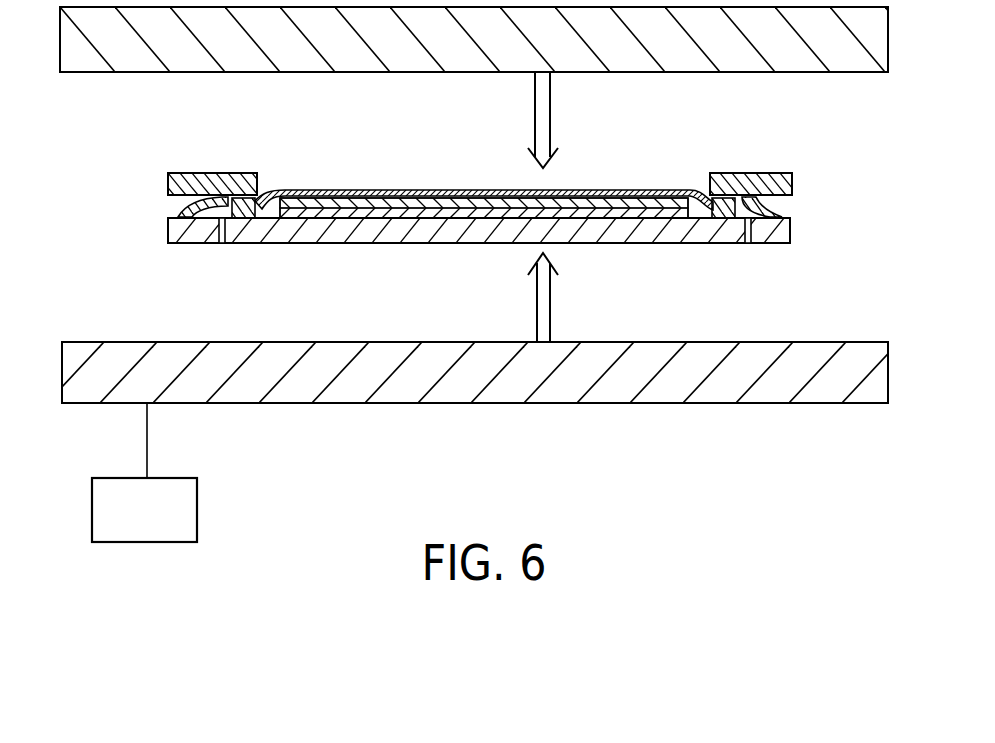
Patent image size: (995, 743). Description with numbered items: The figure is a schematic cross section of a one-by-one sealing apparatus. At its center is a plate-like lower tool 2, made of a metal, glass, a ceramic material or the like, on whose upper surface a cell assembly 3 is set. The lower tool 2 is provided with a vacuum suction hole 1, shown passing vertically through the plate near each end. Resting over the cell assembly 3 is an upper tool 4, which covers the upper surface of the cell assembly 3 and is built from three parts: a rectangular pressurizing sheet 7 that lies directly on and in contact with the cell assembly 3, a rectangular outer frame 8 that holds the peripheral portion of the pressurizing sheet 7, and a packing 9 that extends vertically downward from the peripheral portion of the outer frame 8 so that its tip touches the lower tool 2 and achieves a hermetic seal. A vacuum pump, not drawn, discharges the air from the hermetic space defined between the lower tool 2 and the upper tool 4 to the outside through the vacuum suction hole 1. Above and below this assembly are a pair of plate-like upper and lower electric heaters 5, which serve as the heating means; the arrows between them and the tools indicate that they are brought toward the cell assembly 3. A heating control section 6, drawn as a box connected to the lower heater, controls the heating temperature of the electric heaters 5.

The vacuum suction hole 1 is at (222, 243).
The lower tool 2 is at (448, 243).
The cell assembly 3 is at (621, 196).
The upper tool 4 is at (212, 129).
The electric heaters 5 is at (712, 58).
The heating control section 6 is at (186, 512).
The pressurizing sheet 7 is at (318, 188).
The outer frame 8 is at (258, 178).
The packing 9 is at (222, 176).